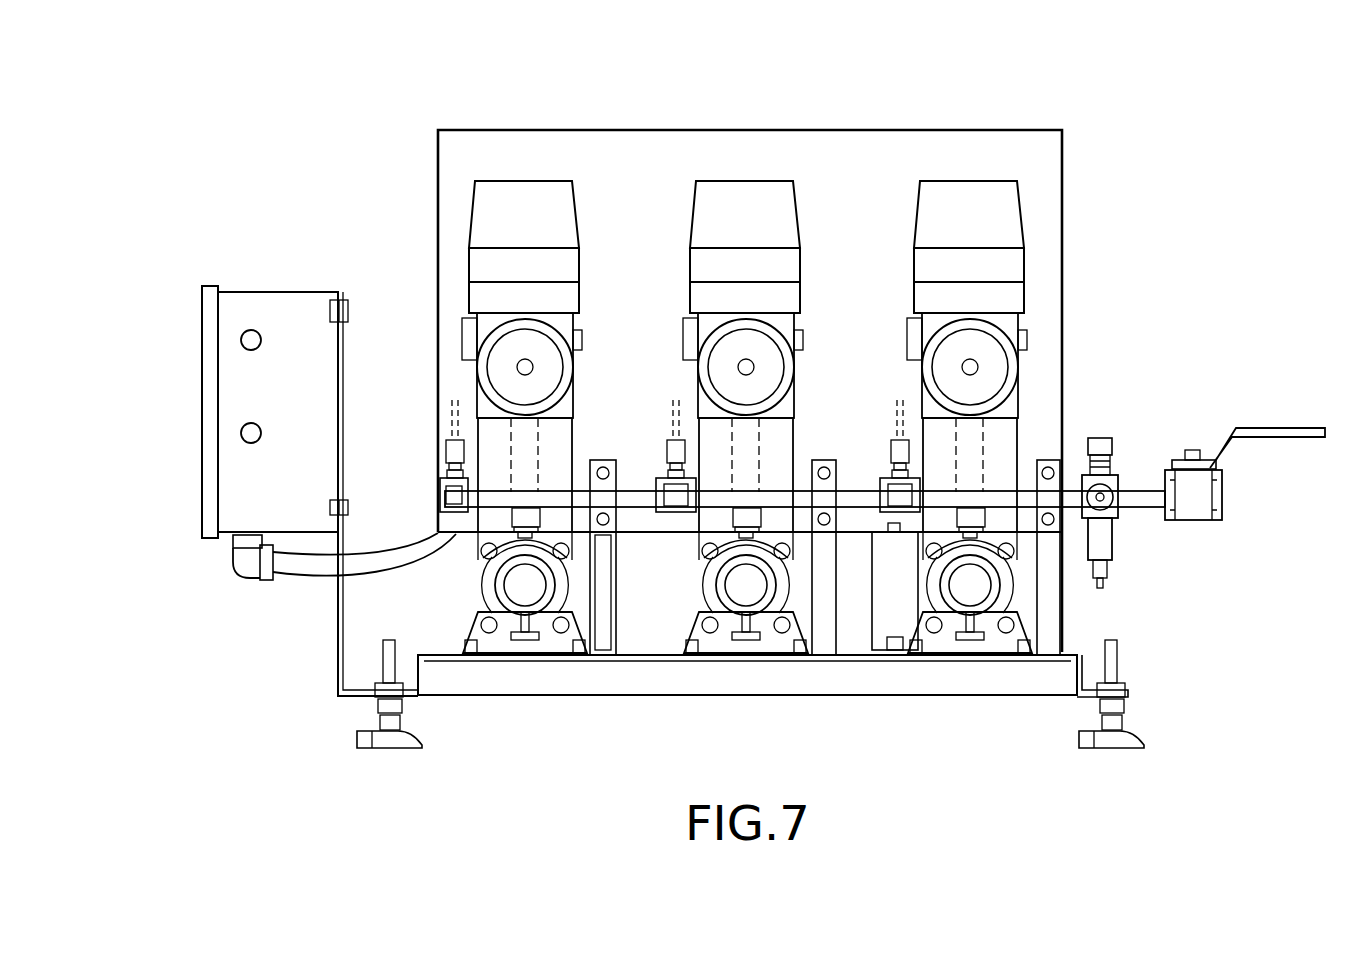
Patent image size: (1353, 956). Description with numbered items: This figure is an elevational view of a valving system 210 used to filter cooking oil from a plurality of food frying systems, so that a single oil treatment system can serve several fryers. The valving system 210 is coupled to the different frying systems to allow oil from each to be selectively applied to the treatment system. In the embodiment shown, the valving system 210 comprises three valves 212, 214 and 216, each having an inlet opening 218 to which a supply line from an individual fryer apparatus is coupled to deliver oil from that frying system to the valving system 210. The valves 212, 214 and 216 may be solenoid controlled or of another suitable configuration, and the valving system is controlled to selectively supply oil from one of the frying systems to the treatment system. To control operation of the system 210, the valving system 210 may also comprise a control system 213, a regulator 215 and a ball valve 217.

The valving system 210 is at (356, 144).
The valve 212 is at (522, 170).
The control system 213 is at (202, 393).
The valve 214 is at (733, 170).
The regulator 215 is at (1118, 535).
The valve 216 is at (954, 170).
The ball valve 217 is at (1296, 440).
The inlet opening 218 is at (547, 622).